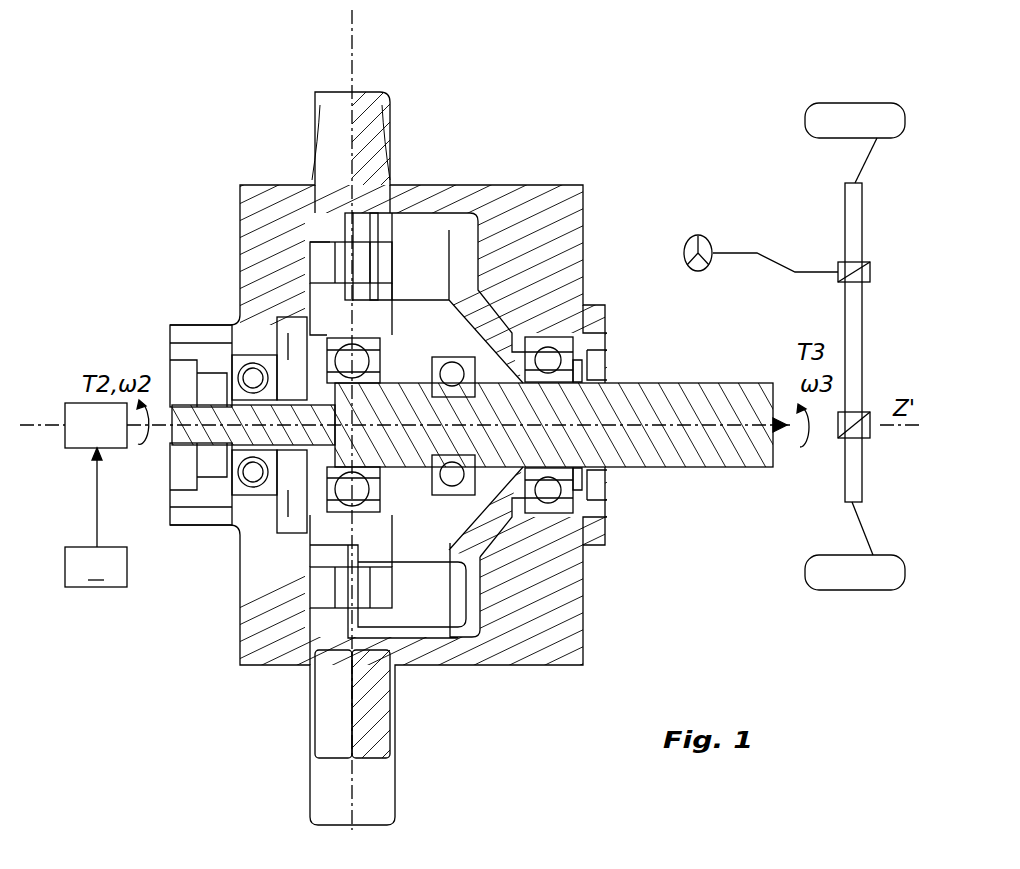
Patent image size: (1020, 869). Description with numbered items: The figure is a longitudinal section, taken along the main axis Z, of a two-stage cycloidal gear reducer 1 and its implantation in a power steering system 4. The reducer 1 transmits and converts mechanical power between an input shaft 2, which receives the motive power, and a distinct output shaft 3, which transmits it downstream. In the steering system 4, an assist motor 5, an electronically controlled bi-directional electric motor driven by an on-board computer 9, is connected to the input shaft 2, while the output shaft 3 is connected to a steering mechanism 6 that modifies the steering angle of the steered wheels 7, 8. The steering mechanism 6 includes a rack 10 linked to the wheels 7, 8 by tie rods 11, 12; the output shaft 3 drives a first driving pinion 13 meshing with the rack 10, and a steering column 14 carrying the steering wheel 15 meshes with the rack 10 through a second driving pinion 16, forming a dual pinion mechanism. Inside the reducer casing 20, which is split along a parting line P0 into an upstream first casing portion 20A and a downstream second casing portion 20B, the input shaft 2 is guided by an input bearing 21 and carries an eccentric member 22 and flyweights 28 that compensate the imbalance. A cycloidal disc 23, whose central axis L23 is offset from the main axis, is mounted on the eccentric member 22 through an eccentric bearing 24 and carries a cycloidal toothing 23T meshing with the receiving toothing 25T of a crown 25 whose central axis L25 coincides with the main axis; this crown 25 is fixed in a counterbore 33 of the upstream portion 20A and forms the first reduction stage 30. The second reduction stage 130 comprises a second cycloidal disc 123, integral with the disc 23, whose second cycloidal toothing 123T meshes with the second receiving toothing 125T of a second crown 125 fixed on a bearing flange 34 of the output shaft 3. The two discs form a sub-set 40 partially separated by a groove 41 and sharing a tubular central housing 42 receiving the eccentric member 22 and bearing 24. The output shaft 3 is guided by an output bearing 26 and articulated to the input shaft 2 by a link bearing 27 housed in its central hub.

The cycloidal gear reducer 1 is at (242, 78).
The input shaft 2 is at (172, 437).
The output shaft 3 is at (760, 455).
The power steering system 4 is at (843, 56).
The assist motor 5 is at (78, 449).
The steering mechanism 6 is at (884, 202).
The steered wheel 7 is at (865, 117).
The steered wheel 8 is at (860, 573).
The computer 9 is at (96, 517).
The rack 10 is at (853, 347).
The tie rod 11 is at (863, 158).
The tie rod 12 is at (865, 527).
The first driving pinion 13 is at (866, 438).
The steering column 14 is at (814, 270).
The steering wheel 15 is at (703, 237).
The second driving pinion 16 is at (870, 272).
The reducer casing 20 is at (268, 250).
The first casing portion 20A is at (333, 105).
The second casing portion 20B is at (372, 105).
The input bearing 21 is at (240, 367).
The eccentric member 22 is at (343, 497).
The cycloidal disc 23 is at (316, 570).
The cycloidal toothing 23T is at (330, 610).
The eccentric bearing 24 is at (330, 515).
The crown 25 is at (314, 248).
The receiving toothing 25T is at (316, 232).
The output bearing 26 is at (560, 497).
The link bearing 27 is at (520, 490).
The flyweight 28 is at (452, 350).
The first reduction stage 30 is at (330, 826).
The counterbore 33 is at (333, 228).
The bearing flange 34 is at (412, 597).
The sub-set of discs 40 is at (380, 318).
The groove 41 is at (378, 200).
The tubular central housing 42 is at (338, 540).
The second cycloidal disc 123 is at (405, 275).
The second cycloidal toothing 123T is at (374, 589).
The second crown 125 is at (400, 245).
The second cycloidal receiving toothing 125T is at (388, 582).
The second reduction stage 130 is at (378, 826).
The central axis of the cycloidal disc L23 is at (240, 493).
The central axis of the crown L25 is at (305, 370).
The parting line P0 is at (358, 26).
The main axis Z is at (405, 411).